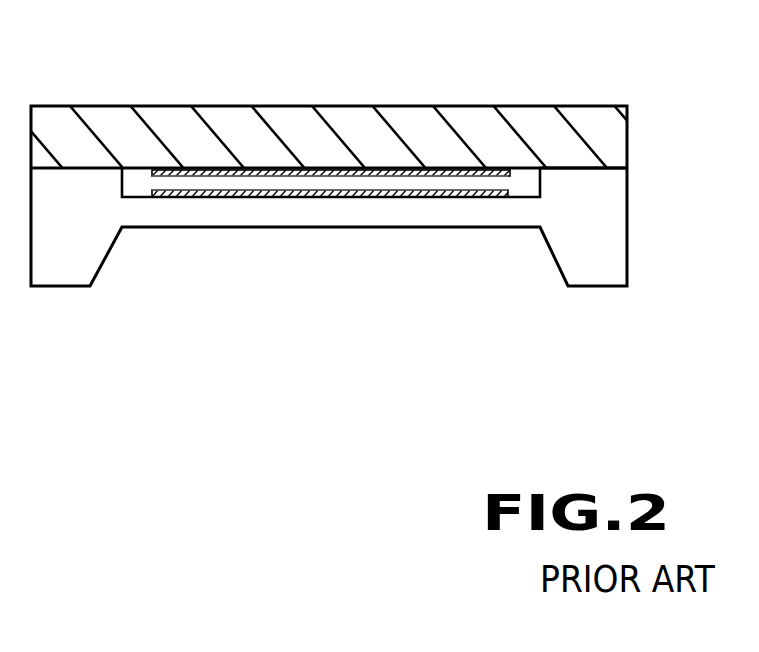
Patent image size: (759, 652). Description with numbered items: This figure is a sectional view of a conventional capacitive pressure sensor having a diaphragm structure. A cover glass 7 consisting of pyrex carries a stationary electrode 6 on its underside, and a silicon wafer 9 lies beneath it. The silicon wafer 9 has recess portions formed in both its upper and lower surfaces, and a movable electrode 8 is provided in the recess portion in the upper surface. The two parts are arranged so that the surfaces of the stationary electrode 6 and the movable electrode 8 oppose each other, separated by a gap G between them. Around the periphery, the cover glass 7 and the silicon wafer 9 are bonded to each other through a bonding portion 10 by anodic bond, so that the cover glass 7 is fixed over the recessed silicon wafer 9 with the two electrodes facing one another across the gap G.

The stationary electrode 6 is at (372, 168).
The cover glass 7 is at (612, 135).
The movable electrode 8 is at (275, 197).
The silicon wafer 9 is at (593, 253).
The bonding portion 10 is at (597, 170).
The gap G is at (140, 187).